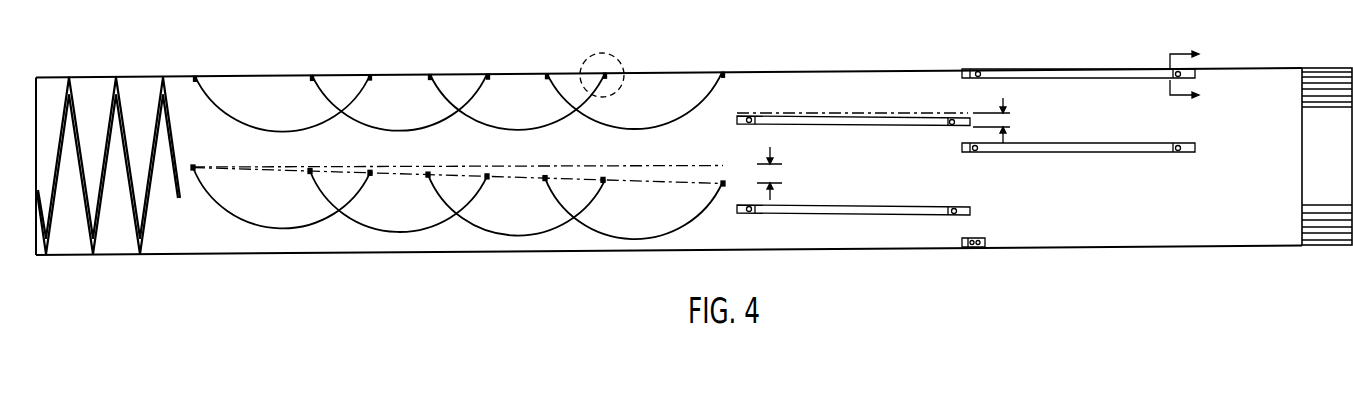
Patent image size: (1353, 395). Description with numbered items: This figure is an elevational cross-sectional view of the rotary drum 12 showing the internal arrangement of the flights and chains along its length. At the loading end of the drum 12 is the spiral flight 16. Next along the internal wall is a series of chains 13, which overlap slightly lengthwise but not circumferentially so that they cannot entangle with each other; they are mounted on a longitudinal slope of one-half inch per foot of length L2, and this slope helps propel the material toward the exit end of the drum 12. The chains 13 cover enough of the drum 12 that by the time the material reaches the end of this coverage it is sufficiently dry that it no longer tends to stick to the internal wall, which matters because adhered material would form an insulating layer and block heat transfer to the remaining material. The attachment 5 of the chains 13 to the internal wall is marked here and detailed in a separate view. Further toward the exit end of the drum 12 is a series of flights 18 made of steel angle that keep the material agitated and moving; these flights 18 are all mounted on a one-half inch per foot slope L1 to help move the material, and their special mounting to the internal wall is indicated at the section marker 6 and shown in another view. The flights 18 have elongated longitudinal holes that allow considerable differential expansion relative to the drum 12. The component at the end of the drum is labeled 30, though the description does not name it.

The attachment 5 is at (622, 60).
The flight mounting detail 6 is at (1193, 74).
The rotary drum 12 is at (352, 75).
The chains 13 is at (323, 106).
The spiral flight 16 is at (125, 92).
The flights 18 is at (858, 125).
The threaded end cap 30 is at (1336, 67).
The slope L1 is at (1004, 120).
The slope of length L2 is at (783, 173).